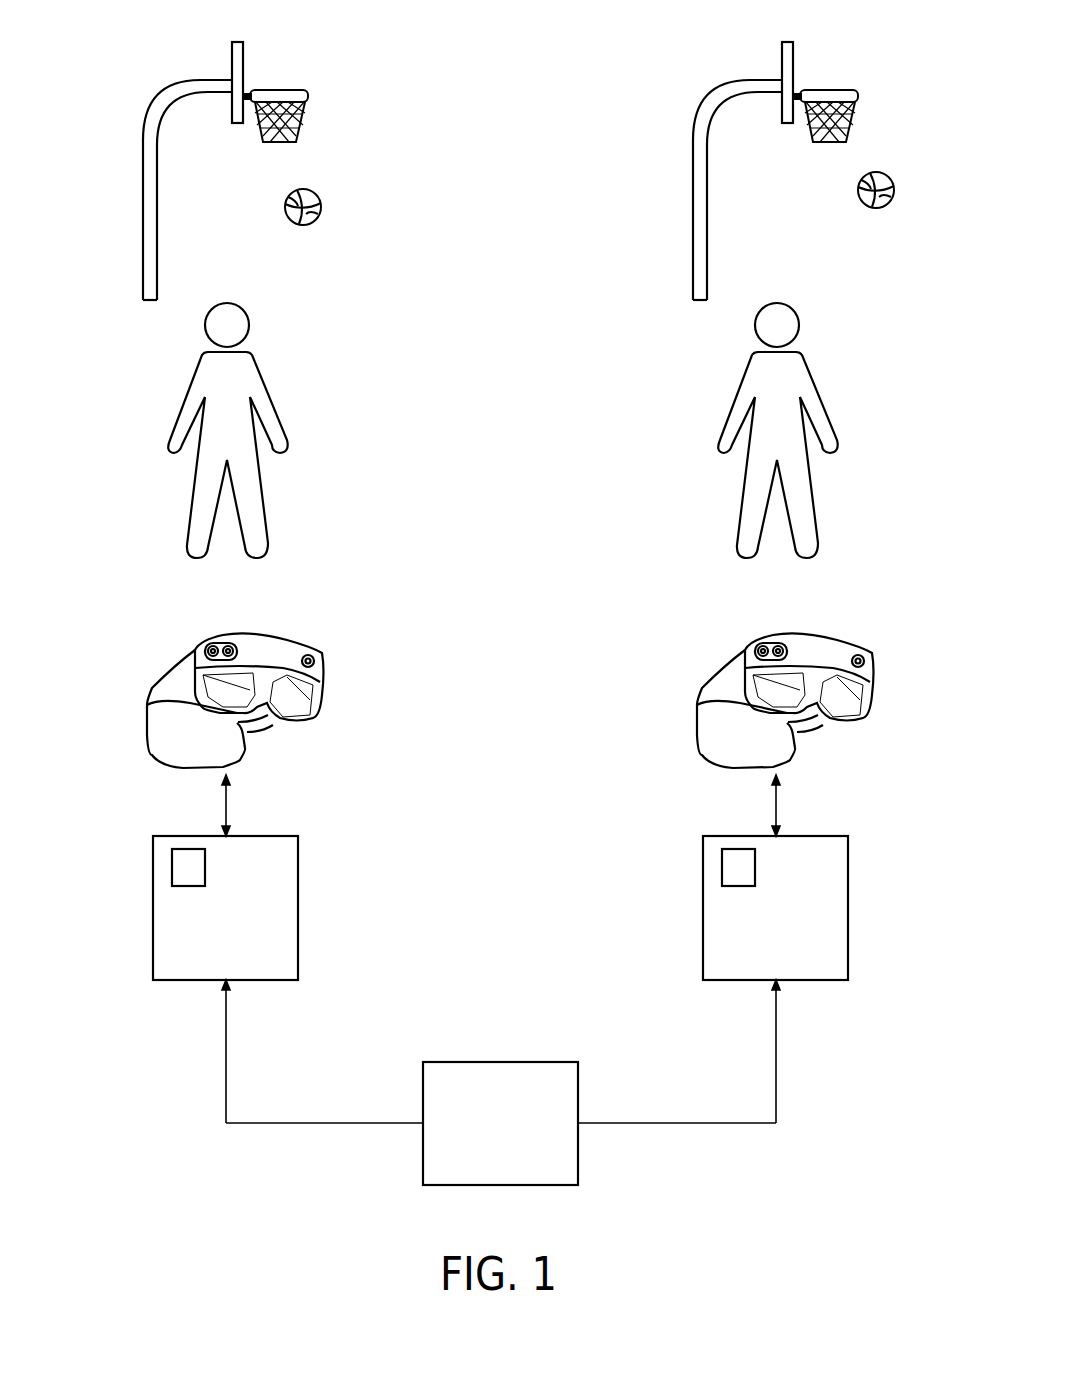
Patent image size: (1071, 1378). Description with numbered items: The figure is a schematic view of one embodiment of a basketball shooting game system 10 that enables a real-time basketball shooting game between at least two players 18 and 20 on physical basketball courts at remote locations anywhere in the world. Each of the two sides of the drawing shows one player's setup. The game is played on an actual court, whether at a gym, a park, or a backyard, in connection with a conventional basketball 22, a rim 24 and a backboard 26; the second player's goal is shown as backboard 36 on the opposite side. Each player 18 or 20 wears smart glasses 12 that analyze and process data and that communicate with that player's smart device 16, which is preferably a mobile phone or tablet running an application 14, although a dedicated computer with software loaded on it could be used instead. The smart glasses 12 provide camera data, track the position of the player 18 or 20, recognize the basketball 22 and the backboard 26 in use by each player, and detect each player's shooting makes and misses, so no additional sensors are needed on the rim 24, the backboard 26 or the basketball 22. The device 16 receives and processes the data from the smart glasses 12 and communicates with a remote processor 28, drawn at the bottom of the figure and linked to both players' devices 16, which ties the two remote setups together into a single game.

The basketball shooting game system 10 is at (107, 135).
The smart glasses 12 is at (287, 653).
The application 14 is at (183, 875).
The smart device 16 is at (275, 886).
The game player 18 is at (215, 380).
The game player 20 is at (797, 375).
The basketball 22 is at (321, 195).
The rim 24 is at (289, 92).
The backboard 26 is at (232, 61).
The remote processor 28 is at (485, 1080).
The second basketball goal 36 is at (782, 68).